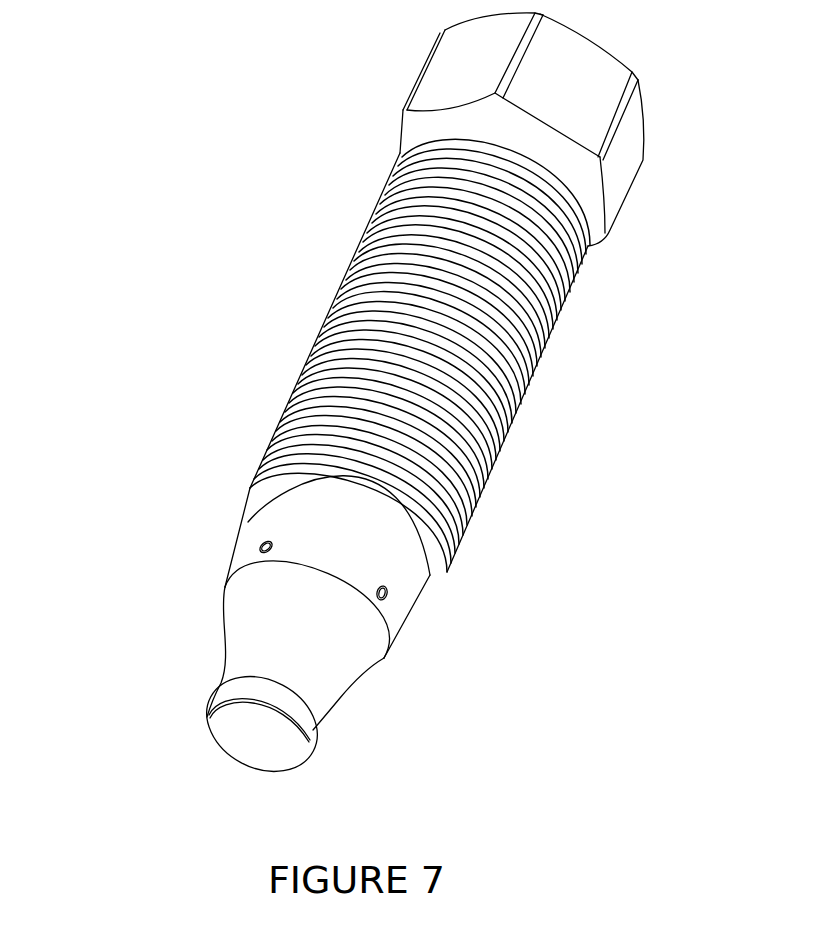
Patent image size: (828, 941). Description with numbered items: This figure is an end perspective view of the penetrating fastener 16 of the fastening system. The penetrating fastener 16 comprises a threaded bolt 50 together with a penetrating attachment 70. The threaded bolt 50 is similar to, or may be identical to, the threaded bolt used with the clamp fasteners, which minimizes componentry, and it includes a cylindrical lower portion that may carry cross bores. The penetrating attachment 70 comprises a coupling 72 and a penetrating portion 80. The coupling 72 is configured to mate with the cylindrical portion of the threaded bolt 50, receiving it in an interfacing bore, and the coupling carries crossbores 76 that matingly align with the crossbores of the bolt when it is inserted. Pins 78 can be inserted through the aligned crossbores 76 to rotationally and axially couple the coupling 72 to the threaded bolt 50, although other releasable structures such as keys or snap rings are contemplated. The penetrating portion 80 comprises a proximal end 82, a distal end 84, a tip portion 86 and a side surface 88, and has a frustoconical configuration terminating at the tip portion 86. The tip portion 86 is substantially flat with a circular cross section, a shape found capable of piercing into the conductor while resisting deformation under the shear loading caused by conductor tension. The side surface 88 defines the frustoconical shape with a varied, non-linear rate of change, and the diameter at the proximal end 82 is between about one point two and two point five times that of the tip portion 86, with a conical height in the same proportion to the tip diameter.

The penetrating fastener 16 is at (262, 257).
The threaded bolt 50 is at (577, 351).
The penetrating attachment 70 is at (317, 559).
The coupling 72 is at (280, 512).
The crossbores 76 is at (389, 592).
The pins 78 is at (381, 599).
The penetrating portion 80 is at (261, 680).
The proximal end 82 is at (199, 578).
The distal end 84 is at (309, 742).
The tip portion 86 is at (248, 760).
The side surface 88 is at (362, 664).